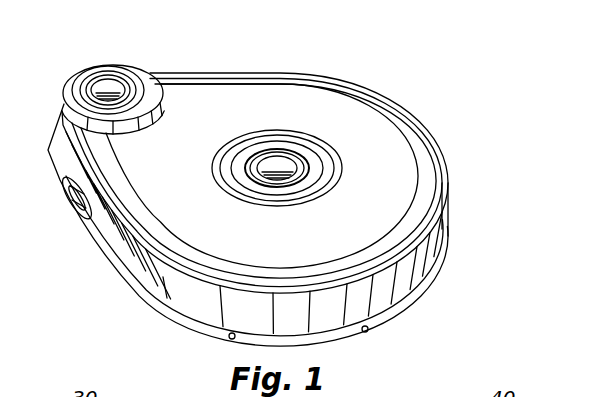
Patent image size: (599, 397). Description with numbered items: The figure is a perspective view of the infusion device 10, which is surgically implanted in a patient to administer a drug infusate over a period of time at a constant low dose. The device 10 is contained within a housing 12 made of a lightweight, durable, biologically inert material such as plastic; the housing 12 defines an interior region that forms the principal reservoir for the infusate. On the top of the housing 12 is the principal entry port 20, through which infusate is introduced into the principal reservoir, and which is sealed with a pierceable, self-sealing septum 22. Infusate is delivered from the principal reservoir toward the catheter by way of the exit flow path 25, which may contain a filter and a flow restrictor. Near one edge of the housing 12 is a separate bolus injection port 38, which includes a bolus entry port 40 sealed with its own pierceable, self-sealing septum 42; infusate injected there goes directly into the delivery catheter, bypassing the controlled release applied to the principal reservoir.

The infusion device 10 is at (447, 127).
The housing 12 is at (310, 82).
The principal entry port 20 is at (267, 147).
The septum 22 is at (303, 143).
The exit flow path 25 is at (77, 207).
The bolus injection port 38 is at (124, 60).
The bolus entry port 40 is at (80, 78).
The septum 42 is at (100, 87).